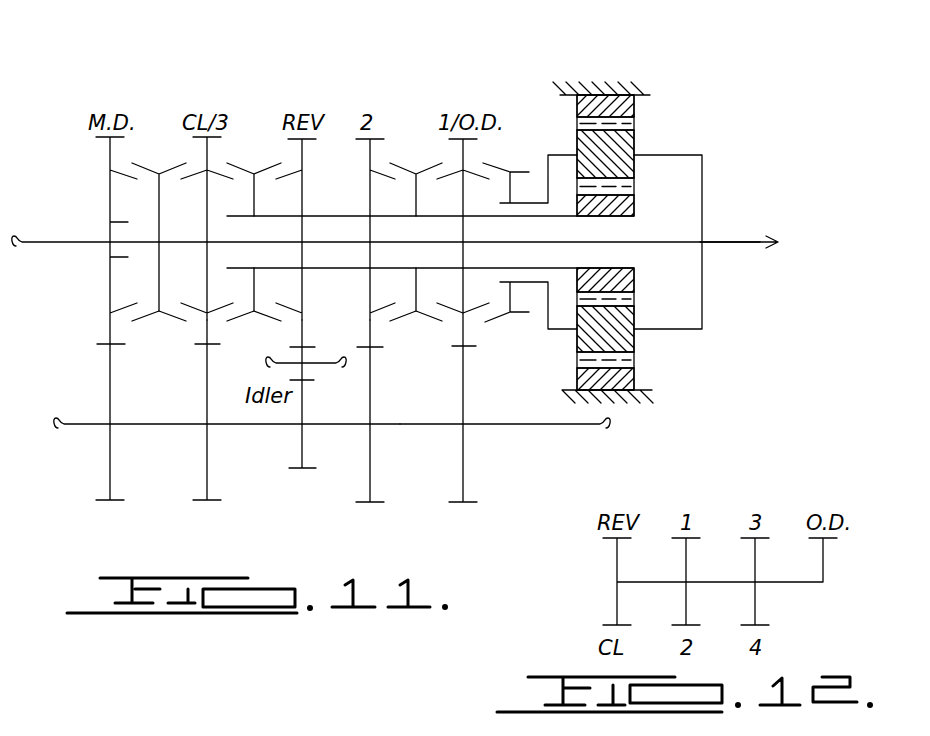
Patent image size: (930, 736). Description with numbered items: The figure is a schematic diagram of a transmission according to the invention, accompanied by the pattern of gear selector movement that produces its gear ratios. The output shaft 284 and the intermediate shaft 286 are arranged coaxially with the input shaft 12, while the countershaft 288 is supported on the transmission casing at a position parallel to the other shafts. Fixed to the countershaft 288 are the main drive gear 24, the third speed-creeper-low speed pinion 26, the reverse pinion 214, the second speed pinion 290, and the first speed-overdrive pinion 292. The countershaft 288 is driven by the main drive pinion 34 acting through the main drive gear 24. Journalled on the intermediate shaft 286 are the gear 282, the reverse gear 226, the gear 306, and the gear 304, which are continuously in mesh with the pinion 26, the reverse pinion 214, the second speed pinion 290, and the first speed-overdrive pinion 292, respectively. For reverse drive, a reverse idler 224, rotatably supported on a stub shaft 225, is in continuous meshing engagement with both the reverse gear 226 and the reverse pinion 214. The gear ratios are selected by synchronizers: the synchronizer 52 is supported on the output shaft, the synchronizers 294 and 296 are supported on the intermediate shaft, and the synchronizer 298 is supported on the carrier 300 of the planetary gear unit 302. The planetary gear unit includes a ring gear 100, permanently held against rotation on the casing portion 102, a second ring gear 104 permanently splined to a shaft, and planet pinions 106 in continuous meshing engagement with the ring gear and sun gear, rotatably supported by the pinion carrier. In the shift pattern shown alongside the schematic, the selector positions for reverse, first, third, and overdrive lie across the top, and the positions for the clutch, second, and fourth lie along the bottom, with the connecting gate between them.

The input shaft 12 is at (40, 236).
The main drive gear 24 is at (110, 467).
The third speed-creeper-low speed pinion 26 is at (207, 483).
The main drive pinion 34 is at (110, 148).
The synchronizer 52 is at (163, 330).
The ring gear 100 is at (627, 110).
The casing portion 102 is at (590, 83).
The ring gear 104 is at (665, 208).
The planet pinions 106 is at (607, 145).
The reverse pinion 214 is at (302, 446).
The reverse idler 224 is at (305, 378).
The stub shaft 225 is at (318, 362).
The reverse gear 226 is at (304, 154).
The gear 282 is at (205, 148).
The output shaft 284 is at (740, 240).
The intermediate shaft 286 is at (336, 216).
The countershaft 288 is at (587, 427).
The second speed pinion 290 is at (372, 484).
The first speed-overdrive pinion 292 is at (466, 478).
The synchronizer 294 is at (256, 331).
The synchronizer 296 is at (420, 332).
The synchronizer 298 is at (520, 329).
The carrier 300 is at (703, 297).
The planetary gear unit 302 is at (656, 202).
The gear 304 is at (464, 334).
The gear 306 is at (372, 150).